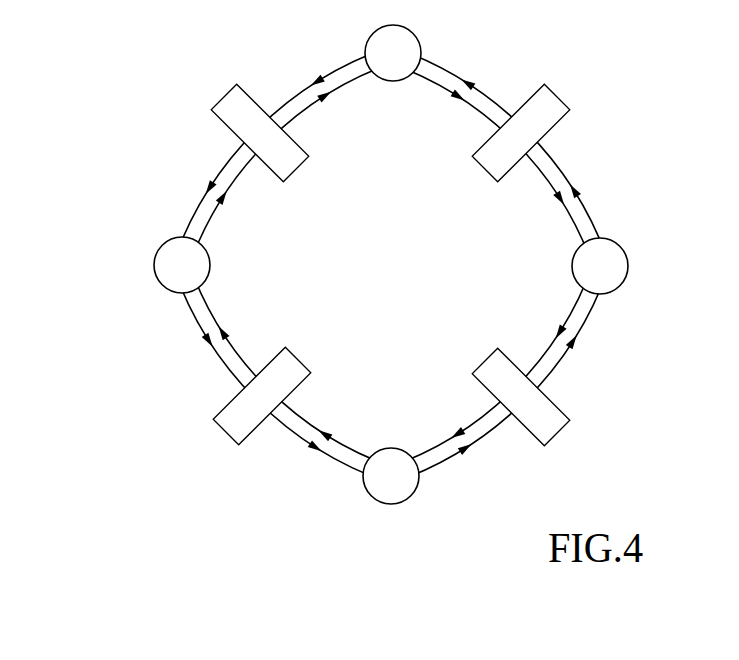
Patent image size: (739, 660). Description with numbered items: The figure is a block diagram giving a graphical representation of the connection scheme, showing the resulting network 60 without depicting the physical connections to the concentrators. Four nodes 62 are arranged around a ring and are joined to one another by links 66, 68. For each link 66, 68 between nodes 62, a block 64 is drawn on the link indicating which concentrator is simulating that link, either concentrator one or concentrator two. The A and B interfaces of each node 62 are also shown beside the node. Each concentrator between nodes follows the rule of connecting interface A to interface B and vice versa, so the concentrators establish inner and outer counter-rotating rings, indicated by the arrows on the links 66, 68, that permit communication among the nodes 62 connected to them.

The network 60 is at (333, 264).
The node 62 is at (393, 82).
The block 64 is at (227, 97).
The link 66 is at (447, 70).
The link 68 is at (440, 86).